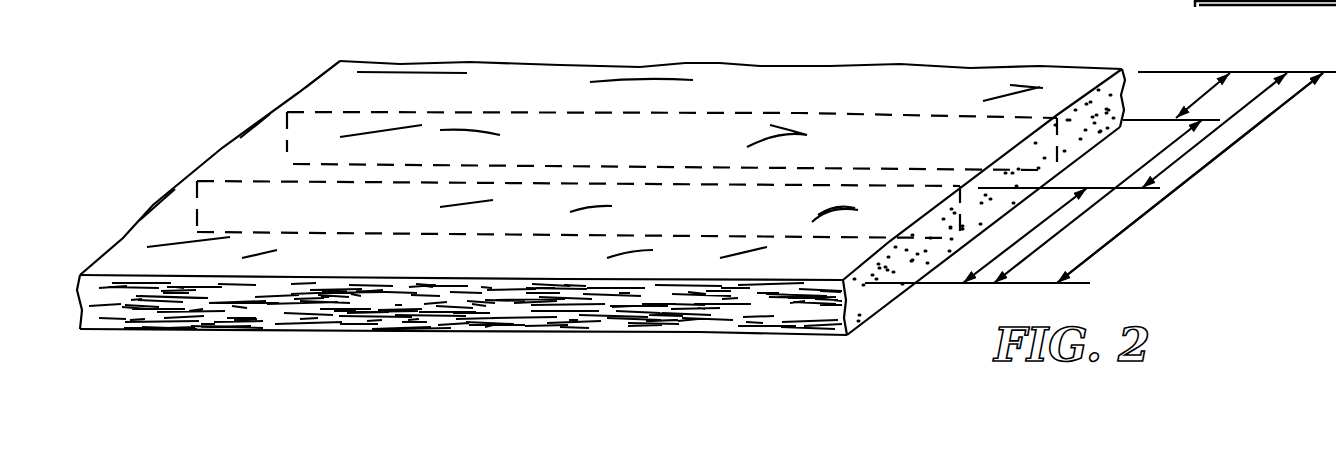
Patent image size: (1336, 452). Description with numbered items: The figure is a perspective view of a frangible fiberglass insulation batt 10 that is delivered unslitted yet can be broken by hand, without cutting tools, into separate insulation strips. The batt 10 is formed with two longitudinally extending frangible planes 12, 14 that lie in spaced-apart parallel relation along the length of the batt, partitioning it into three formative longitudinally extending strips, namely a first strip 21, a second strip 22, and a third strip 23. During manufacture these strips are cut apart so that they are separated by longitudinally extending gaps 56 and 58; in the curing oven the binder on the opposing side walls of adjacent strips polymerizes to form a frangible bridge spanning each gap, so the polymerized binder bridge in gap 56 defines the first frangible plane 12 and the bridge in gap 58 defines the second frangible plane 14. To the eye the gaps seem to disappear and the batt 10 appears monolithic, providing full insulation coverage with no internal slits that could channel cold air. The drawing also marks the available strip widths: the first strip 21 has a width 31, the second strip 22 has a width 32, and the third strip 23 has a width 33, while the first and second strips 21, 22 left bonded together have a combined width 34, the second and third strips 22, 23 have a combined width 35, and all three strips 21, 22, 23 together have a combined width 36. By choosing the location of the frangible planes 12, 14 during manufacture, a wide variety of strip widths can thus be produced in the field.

The frangible fiberglass insulation batt 10 is at (738, 60).
The first frangible plane 12 is at (237, 178).
The second frangible plane 14 is at (307, 108).
The first strip 21 is at (165, 221).
The second strip 22 is at (260, 136).
The third strip 23 is at (326, 80).
The width of first strip 31 is at (993, 260).
The width of second strip 32 is at (1128, 150).
The width of third strip 33 is at (1195, 100).
The combined width of first and second strips 34 is at (1090, 201).
The combined width of second and third strips 35 is at (1214, 131).
The combined width of first, second, and third strips 36 is at (1190, 178).
The longitudinally extending gap 56 is at (585, 207).
The longitudinally extending gap 58 is at (487, 133).